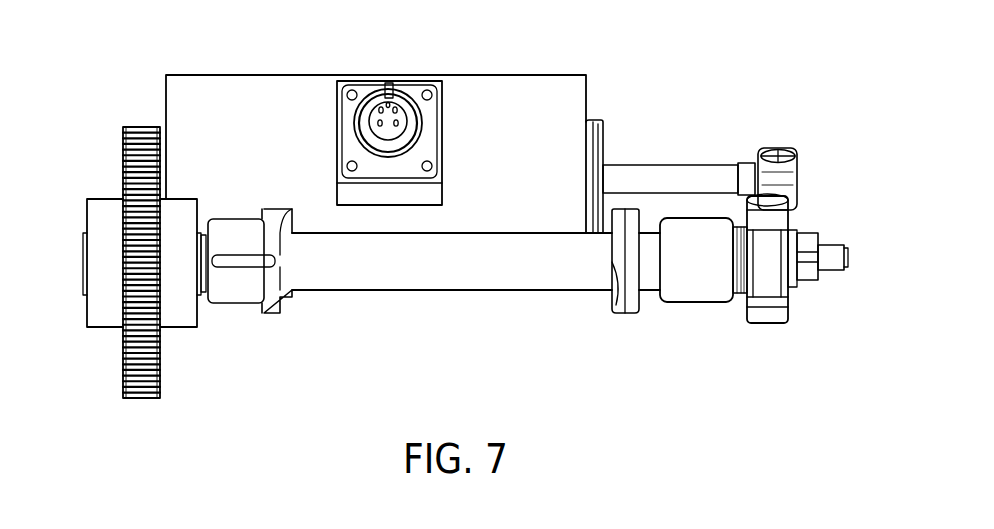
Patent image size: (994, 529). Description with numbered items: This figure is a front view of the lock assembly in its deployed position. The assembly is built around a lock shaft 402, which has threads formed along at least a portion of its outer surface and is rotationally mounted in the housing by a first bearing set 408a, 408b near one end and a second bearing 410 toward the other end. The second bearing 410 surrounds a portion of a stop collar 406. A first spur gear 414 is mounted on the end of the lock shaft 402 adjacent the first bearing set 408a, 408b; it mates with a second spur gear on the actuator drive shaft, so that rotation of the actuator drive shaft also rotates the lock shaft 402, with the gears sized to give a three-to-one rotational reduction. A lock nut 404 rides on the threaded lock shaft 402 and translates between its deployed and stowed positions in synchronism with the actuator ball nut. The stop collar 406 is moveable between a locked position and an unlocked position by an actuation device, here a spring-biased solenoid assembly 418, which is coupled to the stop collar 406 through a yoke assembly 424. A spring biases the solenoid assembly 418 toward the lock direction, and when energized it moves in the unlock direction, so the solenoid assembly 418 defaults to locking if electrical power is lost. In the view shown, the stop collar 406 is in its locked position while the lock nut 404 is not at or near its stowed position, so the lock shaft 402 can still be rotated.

The lock shaft 402 is at (441, 290).
The lock nut 404 is at (241, 305).
The stop collar 406 is at (627, 314).
The first bearing set 408a is at (92, 198).
The first bearing set 408b is at (192, 198).
The second bearing 410 is at (718, 274).
The first spur gear 414 is at (141, 400).
The solenoid assembly 418 is at (513, 84).
The yoke assembly 424 is at (808, 153).